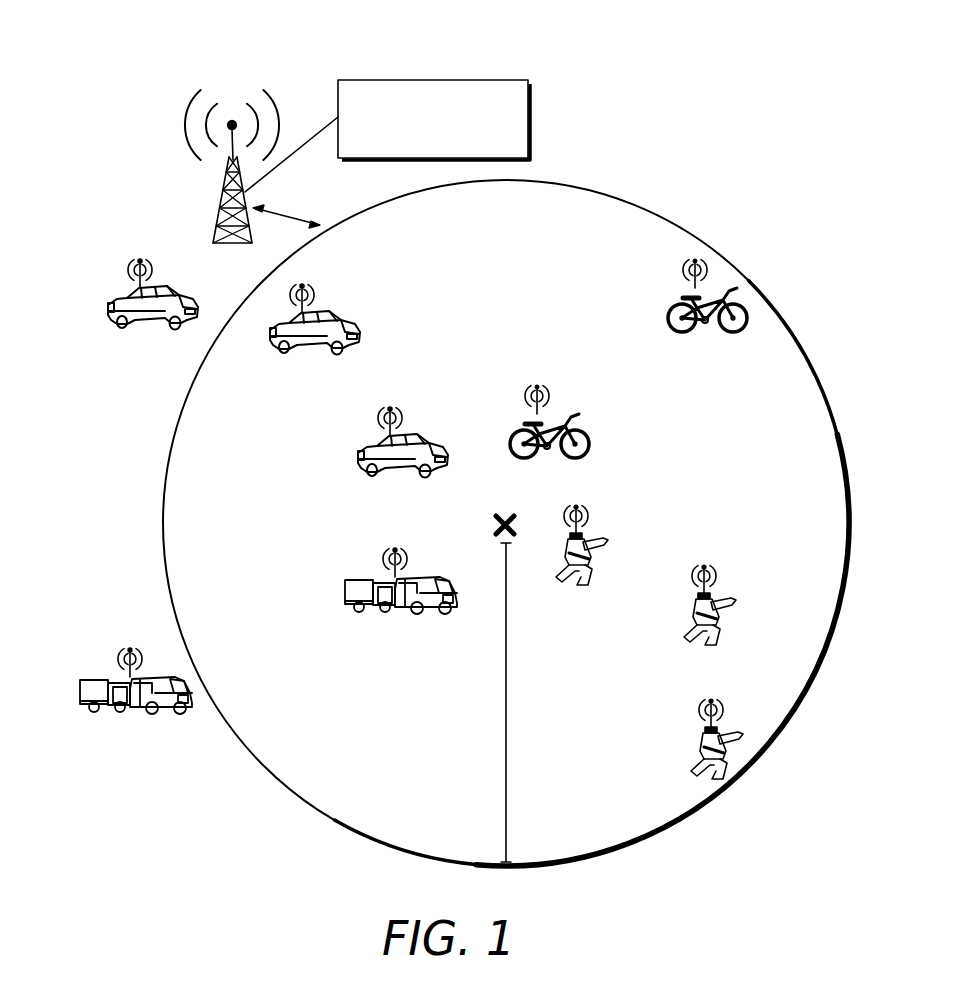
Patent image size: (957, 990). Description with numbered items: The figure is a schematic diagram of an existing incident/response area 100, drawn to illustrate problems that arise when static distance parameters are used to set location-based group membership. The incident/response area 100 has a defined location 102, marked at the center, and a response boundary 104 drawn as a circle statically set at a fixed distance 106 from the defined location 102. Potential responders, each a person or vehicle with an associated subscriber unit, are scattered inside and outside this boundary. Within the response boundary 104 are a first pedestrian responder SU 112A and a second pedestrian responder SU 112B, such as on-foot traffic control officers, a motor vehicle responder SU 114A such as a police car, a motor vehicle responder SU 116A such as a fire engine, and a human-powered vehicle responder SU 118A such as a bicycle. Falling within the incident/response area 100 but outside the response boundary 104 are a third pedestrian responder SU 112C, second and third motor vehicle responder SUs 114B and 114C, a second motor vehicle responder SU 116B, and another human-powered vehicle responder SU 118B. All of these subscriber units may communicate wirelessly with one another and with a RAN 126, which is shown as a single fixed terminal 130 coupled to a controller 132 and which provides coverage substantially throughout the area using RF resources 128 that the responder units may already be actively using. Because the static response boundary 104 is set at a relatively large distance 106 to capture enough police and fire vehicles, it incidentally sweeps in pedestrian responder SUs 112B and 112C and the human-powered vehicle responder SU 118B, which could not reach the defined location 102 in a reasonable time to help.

The incident/response area 100 is at (186, 28).
The defined location 102 is at (512, 512).
The response boundary 104 is at (798, 337).
The fixed distance 106 is at (506, 697).
The first pedestrian responder SU 112A is at (572, 587).
The second pedestrian responder SU 112B is at (720, 628).
The third pedestrian responder SU 112C is at (693, 762).
The motor vehicle responder SU 114A is at (377, 466).
The second motor vehicle responder SU 114B is at (293, 338).
The third motor vehicle responder SU 114C is at (134, 316).
The motor vehicle responder SU 116A is at (393, 612).
The second motor vehicle responder SU 116B is at (128, 712).
The human-powered vehicle responder SU 118A is at (590, 443).
The human-powered vehicle responder SU 118B is at (665, 318).
The RAN 126 is at (146, 98).
The RF resources 128 is at (273, 215).
The fixed terminal 130 is at (223, 197).
The controller 132 is at (433, 80).